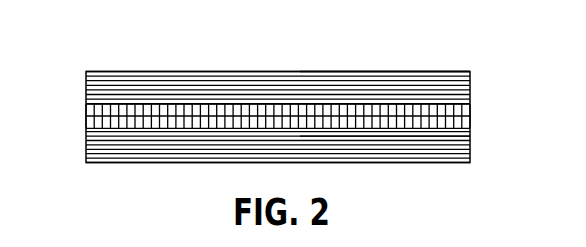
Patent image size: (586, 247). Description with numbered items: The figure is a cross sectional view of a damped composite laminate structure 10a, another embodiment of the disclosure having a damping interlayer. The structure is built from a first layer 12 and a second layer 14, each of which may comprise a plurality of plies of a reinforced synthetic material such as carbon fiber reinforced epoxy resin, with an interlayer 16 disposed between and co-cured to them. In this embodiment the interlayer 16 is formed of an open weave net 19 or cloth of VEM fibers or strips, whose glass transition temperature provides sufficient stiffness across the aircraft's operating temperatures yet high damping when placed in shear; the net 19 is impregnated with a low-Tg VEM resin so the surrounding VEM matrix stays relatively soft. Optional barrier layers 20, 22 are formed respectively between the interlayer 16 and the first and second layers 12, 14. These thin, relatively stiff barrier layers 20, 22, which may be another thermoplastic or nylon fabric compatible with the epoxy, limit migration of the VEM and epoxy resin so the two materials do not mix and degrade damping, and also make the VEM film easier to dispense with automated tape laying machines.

The laminate structure 10a is at (76, 73).
The first layer 12 is at (373, 78).
The second layer 14 is at (363, 155).
The interlayer 16 is at (476, 105).
The open weave net 19 is at (248, 106).
The barrier layer 20 is at (462, 99).
The barrier layer 22 is at (445, 138).